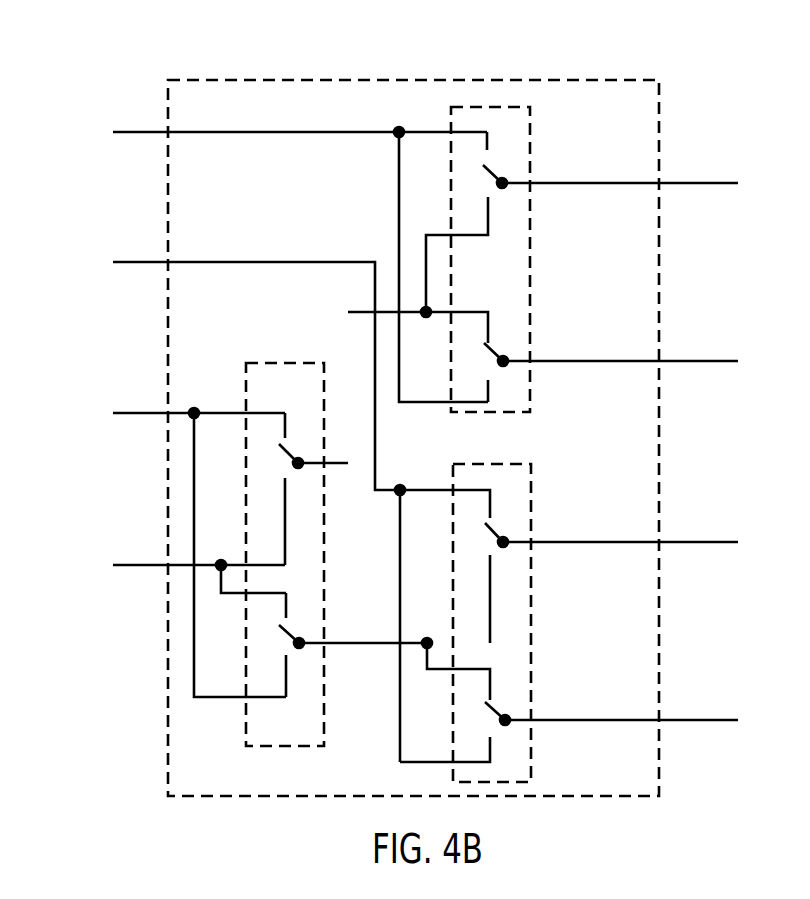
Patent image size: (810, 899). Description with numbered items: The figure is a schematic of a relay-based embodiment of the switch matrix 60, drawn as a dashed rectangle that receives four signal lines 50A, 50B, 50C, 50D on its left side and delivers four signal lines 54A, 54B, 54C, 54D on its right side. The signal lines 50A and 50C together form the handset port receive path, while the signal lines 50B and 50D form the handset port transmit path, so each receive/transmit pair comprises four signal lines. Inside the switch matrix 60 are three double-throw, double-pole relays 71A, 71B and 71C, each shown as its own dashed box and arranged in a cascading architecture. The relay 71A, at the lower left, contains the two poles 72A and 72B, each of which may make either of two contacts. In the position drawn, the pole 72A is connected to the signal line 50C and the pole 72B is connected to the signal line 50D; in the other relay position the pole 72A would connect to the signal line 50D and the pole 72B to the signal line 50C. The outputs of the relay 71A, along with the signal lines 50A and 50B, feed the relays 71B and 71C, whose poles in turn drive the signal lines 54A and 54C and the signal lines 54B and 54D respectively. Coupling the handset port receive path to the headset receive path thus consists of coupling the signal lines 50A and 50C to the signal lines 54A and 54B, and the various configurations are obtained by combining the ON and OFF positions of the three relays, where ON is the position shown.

The signal line 50A is at (300, 255).
The signal line 50B is at (259, 500).
The signal line 50C is at (199, 543).
The signal line 50D is at (199, 567).
The signal line 54A is at (620, 170).
The signal line 54B is at (620, 528).
The signal line 54C is at (620, 348).
The signal line 54D is at (621, 707).
The switch matrix 60 is at (468, 398).
The relay 71A is at (291, 753).
The relay 71B is at (536, 165).
The relay 71C is at (541, 751).
The pole 72A is at (307, 473).
The pole 72B is at (303, 661).